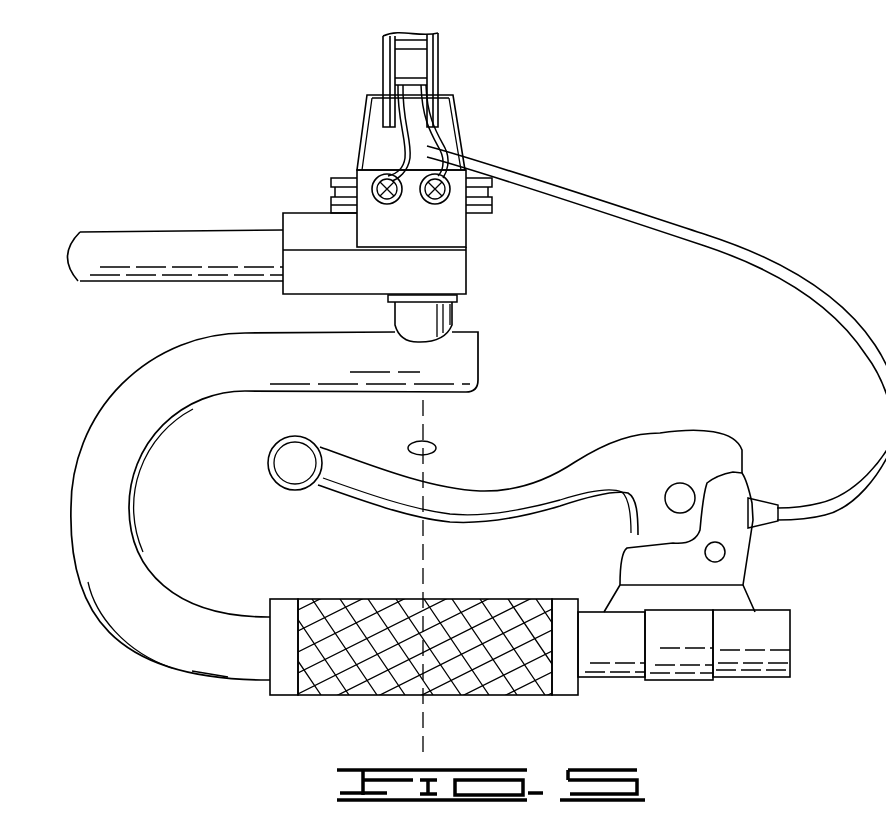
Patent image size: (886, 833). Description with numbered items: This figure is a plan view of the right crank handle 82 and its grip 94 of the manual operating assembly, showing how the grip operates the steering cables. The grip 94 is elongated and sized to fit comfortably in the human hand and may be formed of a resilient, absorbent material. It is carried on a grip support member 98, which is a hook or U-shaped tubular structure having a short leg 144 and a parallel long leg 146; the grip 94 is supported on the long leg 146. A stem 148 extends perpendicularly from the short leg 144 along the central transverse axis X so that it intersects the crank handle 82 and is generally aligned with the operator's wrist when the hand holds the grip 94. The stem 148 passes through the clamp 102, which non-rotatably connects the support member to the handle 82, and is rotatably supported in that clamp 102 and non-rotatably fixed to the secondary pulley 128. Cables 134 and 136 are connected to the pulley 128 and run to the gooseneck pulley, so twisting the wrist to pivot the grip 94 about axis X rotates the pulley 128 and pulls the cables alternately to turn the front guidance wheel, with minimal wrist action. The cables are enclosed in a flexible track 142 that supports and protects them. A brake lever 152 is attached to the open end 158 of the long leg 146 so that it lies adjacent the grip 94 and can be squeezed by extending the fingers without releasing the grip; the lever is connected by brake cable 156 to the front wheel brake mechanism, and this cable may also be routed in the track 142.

The crank handle 82 is at (168, 230).
The grip 94 is at (513, 693).
The grip support member 98 is at (168, 672).
The clamp 102 is at (460, 274).
The secondary pulley 128 is at (487, 210).
The cable 134 is at (402, 152).
The cable 136 is at (418, 167).
The flexible track 142 is at (383, 62).
The short leg 144 is at (313, 340).
The long leg 146 is at (762, 677).
The stem 148 is at (430, 327).
The brake lever 152 is at (367, 492).
The brake cable 156 is at (707, 233).
The open end 158 is at (767, 620).
The central transverse axis X is at (437, 447).